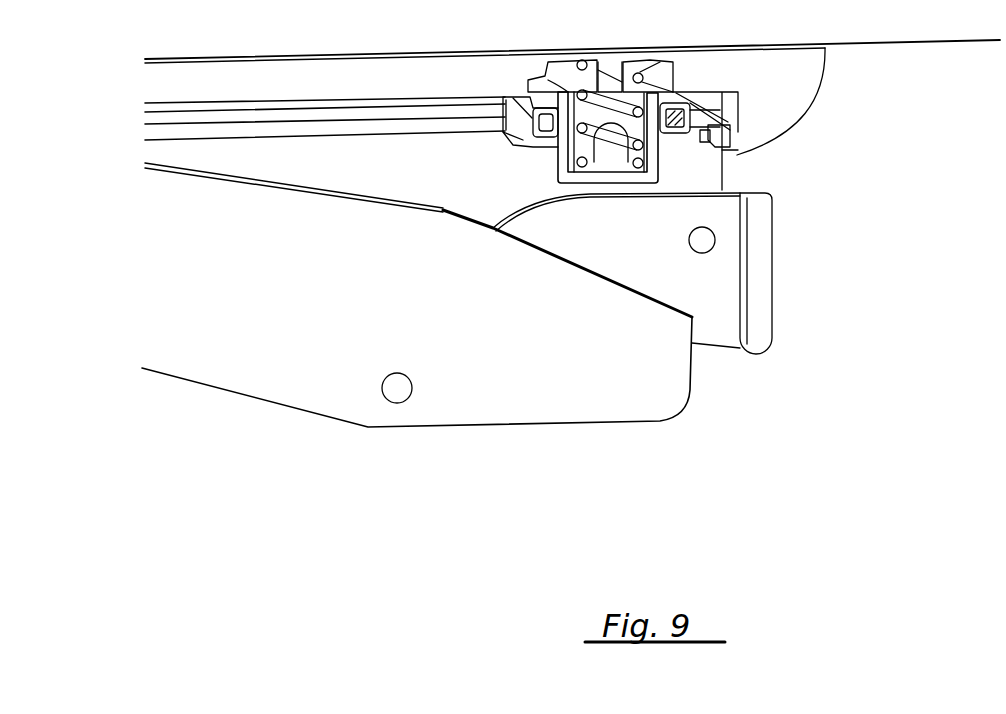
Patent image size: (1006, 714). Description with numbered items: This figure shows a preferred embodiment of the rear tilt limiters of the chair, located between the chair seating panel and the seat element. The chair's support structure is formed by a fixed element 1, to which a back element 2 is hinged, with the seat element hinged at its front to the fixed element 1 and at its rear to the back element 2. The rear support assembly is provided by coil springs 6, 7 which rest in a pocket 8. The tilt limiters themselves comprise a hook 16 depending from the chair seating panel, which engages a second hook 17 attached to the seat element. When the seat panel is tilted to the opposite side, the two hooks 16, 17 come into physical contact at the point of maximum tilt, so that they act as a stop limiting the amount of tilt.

The fixed element 1 is at (650, 372).
The back element 2 is at (712, 292).
The coil spring 6 is at (733, 173).
The coil spring 7 is at (663, 140).
The pocket 8 is at (655, 163).
The hook 16 is at (735, 130).
The second hook 17 is at (737, 146).